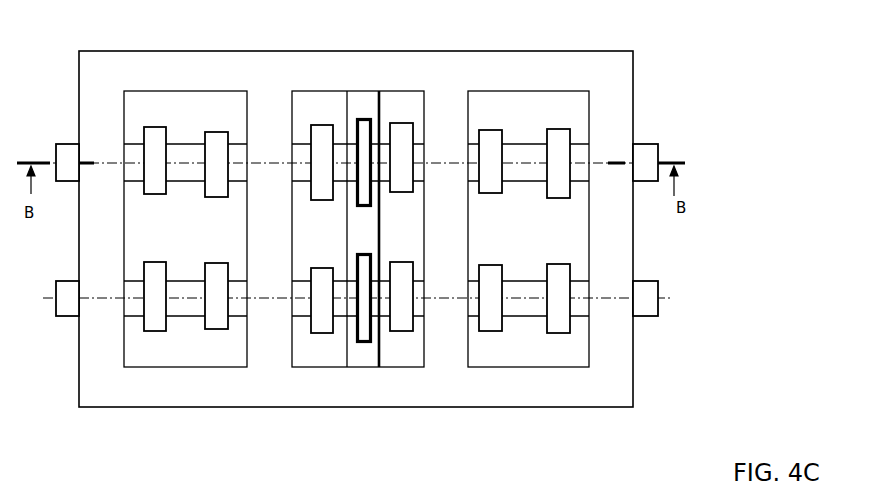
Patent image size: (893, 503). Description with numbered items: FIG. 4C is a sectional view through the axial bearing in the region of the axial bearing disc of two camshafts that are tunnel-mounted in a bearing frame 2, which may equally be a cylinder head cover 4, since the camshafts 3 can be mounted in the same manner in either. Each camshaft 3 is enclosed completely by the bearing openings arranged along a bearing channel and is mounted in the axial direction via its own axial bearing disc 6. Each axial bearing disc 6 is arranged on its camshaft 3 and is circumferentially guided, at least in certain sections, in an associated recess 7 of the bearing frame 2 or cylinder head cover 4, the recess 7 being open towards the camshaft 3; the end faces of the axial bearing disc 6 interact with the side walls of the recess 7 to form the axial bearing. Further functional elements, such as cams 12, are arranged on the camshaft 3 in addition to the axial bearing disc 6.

The bearing frame 2 is at (385, 229).
The cylinder head cover 4 is at (617, 101).
The camshaft 3 is at (650, 148).
The axial bearing disc 6 is at (361, 117).
The recess 7 is at (376, 116).
The cam 12 is at (401, 140).